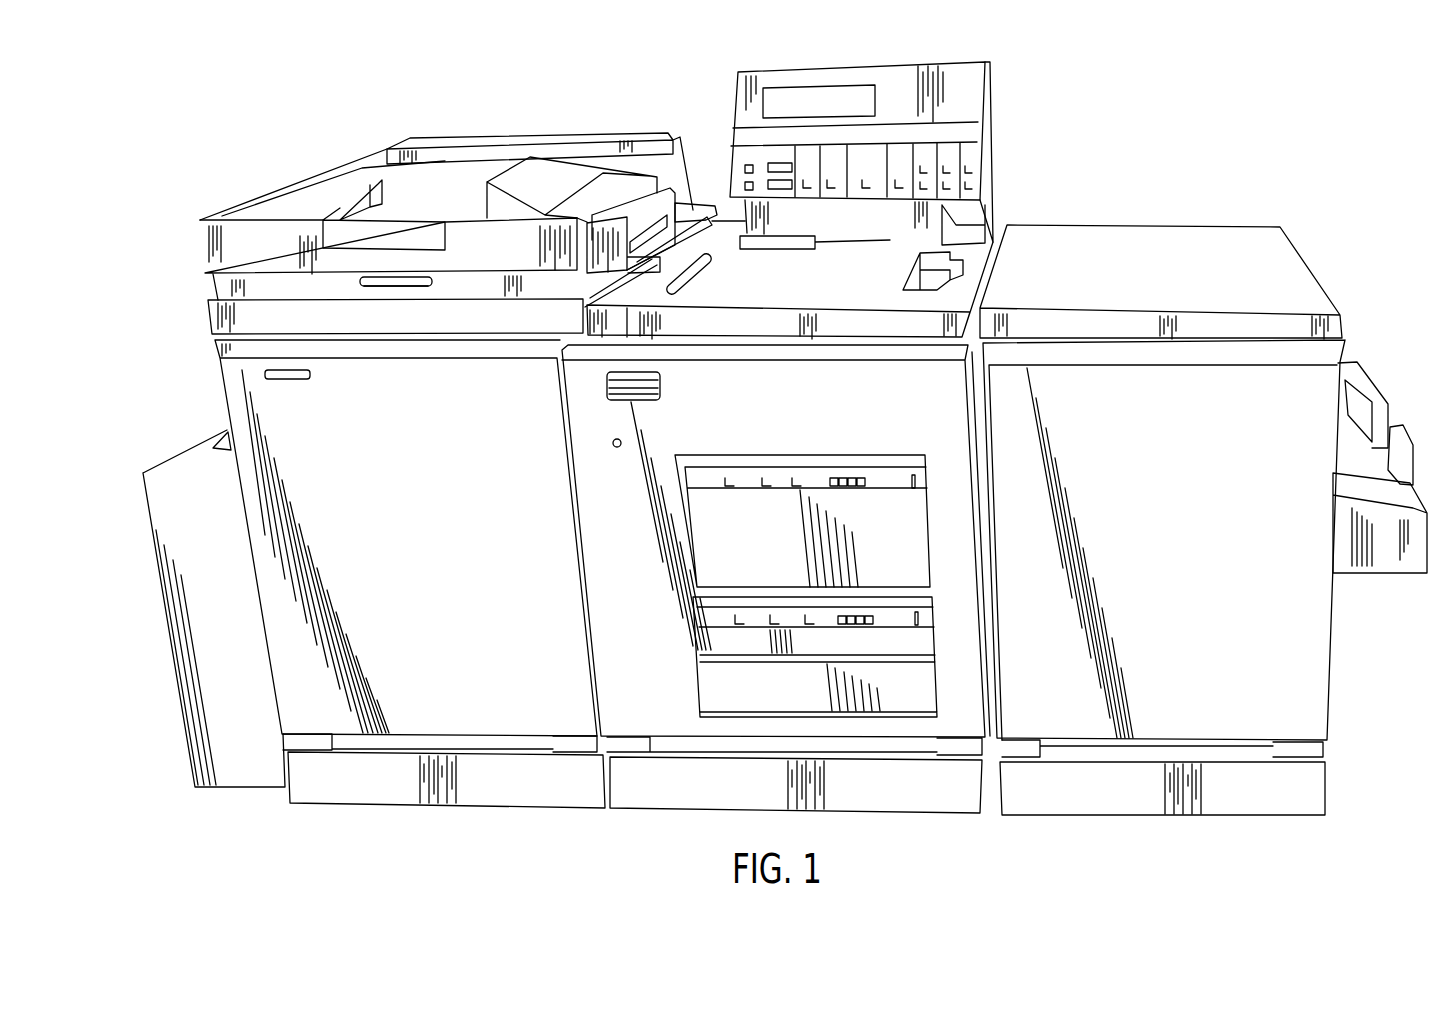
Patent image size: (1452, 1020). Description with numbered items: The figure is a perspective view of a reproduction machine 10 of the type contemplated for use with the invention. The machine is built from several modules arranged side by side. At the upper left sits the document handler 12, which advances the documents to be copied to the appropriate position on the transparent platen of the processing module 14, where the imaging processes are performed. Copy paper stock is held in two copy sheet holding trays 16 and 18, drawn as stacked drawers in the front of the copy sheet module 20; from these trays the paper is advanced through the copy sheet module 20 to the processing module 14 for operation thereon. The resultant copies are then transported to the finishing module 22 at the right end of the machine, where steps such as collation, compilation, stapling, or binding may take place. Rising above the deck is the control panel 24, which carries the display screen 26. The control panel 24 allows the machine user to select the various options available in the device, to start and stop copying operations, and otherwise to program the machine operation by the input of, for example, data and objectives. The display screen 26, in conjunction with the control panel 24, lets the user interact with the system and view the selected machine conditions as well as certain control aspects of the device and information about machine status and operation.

The reproduction machine 10 is at (1102, 143).
The document handler 12 is at (296, 176).
The processing module 14 is at (290, 822).
The copy sheet holding tray 16 is at (952, 505).
The copy sheet holding tray 18 is at (958, 664).
The copy sheet module 20 is at (640, 820).
The finishing module 22 is at (1207, 225).
The control panel 24 is at (1032, 133).
The display screen 26 is at (777, 100).